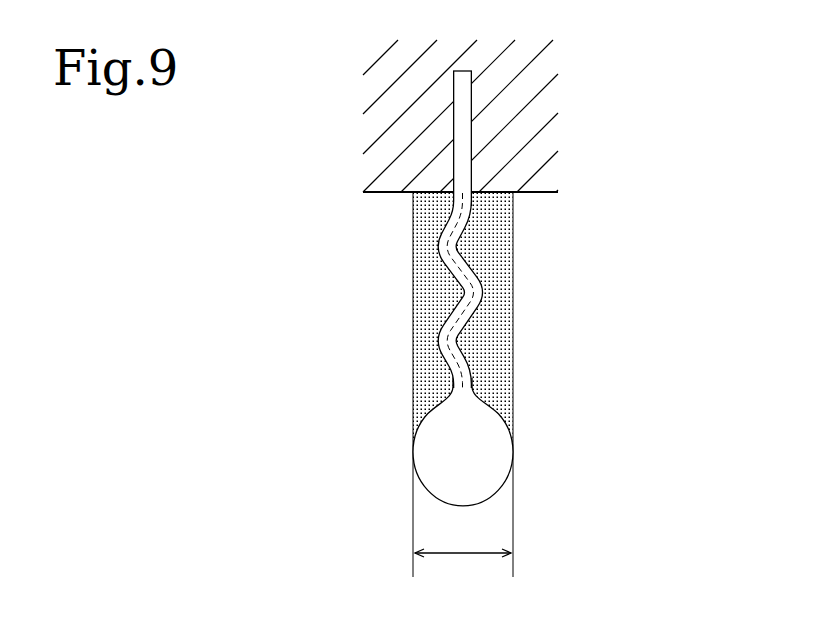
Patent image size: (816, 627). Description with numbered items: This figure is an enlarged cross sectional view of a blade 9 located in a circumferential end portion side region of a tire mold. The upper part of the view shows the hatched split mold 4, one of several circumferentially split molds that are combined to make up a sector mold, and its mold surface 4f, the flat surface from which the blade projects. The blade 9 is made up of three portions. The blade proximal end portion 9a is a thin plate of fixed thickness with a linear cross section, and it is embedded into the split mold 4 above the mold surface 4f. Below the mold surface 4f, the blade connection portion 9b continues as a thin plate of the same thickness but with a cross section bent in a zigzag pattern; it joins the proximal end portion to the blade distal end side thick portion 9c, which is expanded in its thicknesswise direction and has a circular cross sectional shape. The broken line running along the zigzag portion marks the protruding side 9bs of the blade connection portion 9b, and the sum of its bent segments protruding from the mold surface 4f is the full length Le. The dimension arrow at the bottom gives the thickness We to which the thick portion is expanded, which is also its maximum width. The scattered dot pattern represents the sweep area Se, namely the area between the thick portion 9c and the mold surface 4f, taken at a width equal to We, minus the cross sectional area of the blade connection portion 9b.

The split mold 4 is at (386, 194).
The mold surface 4f is at (528, 193).
The blade 9 is at (577, 288).
The blade proximal end portion 9a is at (470, 142).
The blade connection portion 9b is at (481, 272).
The protruding side of the blade connection portion 9bs is at (477, 305).
The blade distal end side thick portion 9c is at (510, 452).
The sweep area Se is at (427, 317).
The full length of the protruding side Le is at (447, 360).
The thickness of the blade distal end side thick portion We is at (463, 567).